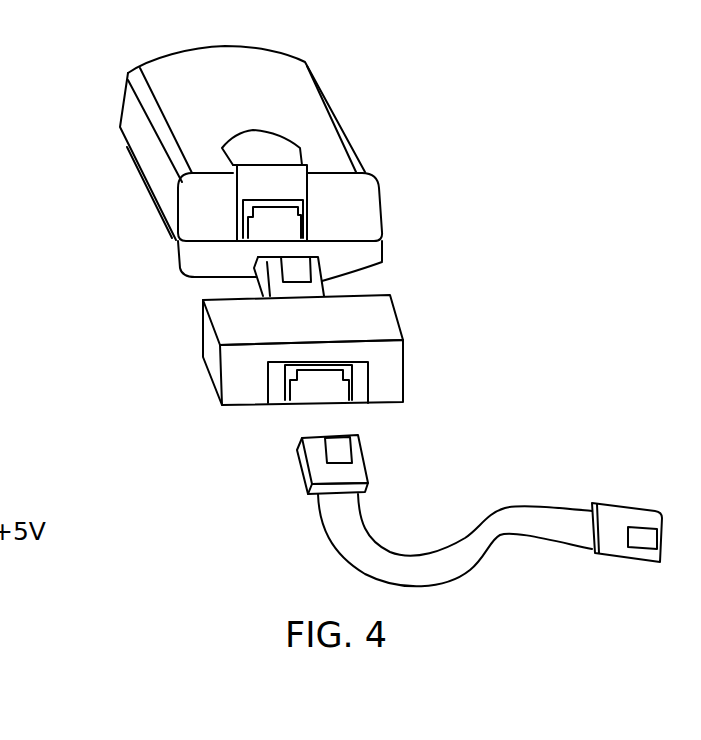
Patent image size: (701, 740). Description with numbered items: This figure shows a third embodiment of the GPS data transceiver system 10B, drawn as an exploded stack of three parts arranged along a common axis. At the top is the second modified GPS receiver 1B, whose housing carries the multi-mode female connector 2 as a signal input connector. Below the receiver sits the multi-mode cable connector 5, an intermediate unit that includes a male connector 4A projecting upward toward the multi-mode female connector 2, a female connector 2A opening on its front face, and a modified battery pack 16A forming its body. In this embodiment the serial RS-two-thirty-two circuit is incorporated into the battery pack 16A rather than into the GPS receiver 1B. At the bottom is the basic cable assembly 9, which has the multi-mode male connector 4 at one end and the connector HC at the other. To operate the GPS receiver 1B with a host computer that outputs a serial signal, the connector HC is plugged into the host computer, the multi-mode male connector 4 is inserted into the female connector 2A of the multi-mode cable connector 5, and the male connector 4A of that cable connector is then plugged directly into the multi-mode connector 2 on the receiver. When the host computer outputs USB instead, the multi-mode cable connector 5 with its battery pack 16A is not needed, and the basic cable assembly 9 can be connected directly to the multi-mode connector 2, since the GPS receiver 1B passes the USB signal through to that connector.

The second modified GPS receiver 1B is at (100, 103).
The GPS data transceiver system 10B is at (428, 122).
The multi-mode female connector 2 is at (297, 225).
The male connector 4A is at (382, 261).
The multi-mode cable connector 5 is at (235, 322).
The modified battery pack 16A is at (383, 330).
The female connector 2A is at (337, 392).
The multi-mode male connector 4 is at (343, 473).
The basic cable assembly 9 is at (290, 527).
The connector HC is at (615, 527).